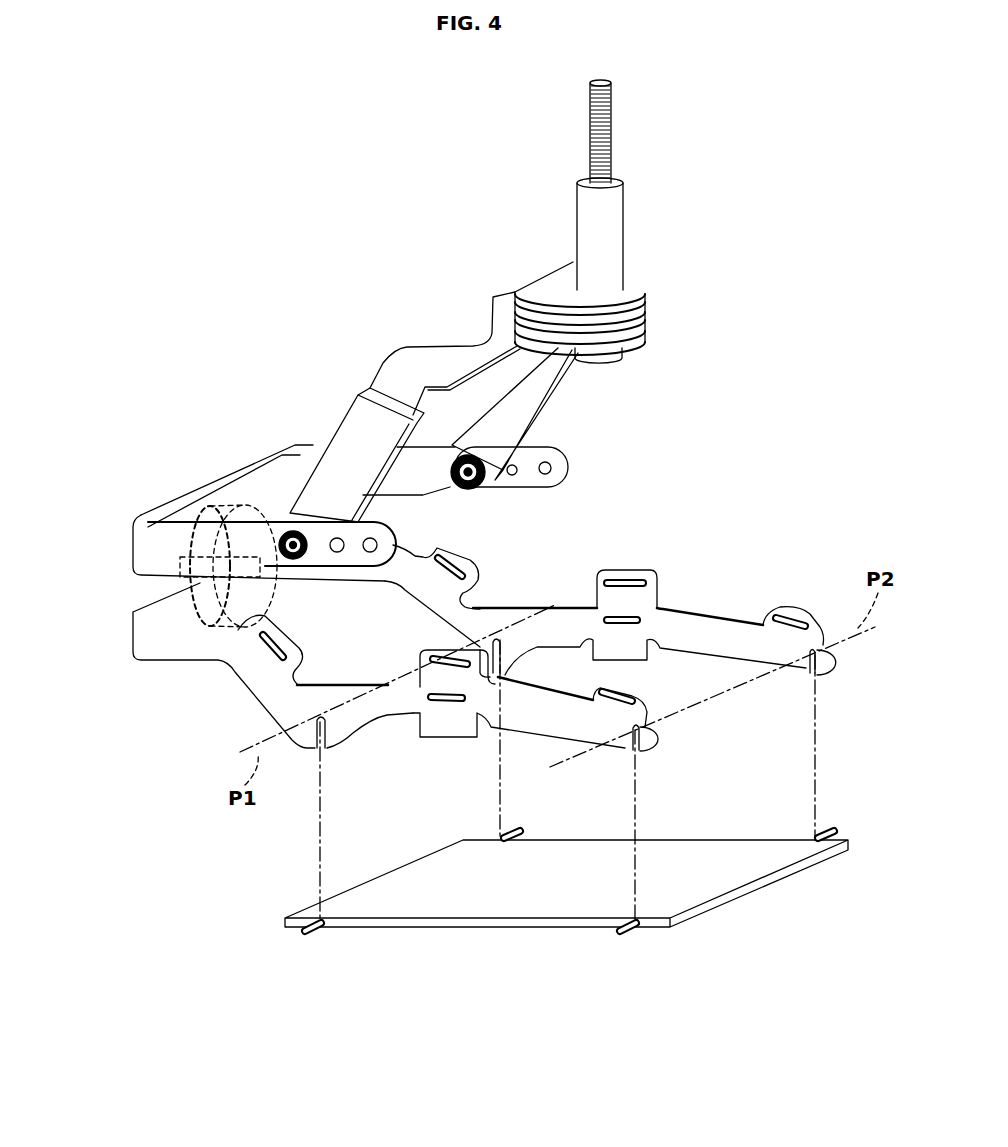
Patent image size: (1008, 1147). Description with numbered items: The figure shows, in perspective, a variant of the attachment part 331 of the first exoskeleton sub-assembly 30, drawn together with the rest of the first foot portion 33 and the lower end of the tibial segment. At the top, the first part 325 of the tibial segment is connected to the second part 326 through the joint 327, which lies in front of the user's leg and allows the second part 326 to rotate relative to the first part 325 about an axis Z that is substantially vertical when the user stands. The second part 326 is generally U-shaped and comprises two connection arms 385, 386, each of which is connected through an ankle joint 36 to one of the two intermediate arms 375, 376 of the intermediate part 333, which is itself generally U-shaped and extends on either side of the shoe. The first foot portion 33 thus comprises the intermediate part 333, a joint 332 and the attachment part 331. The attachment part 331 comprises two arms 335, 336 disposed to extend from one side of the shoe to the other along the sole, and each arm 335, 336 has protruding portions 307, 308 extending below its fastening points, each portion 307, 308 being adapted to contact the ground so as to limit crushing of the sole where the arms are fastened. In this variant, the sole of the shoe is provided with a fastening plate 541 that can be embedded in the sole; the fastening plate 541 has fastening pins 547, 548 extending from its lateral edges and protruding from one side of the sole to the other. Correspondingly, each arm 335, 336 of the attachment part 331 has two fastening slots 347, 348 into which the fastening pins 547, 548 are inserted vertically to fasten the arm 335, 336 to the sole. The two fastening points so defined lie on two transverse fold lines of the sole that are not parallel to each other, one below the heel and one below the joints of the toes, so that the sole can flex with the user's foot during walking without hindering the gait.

The first exoskeleton sub-assembly 30 is at (213, 322).
The first foot portion 33 is at (78, 600).
The ankle joint 36 is at (290, 560).
The protruding portion 307 is at (330, 760).
The protruding portion 308 is at (652, 752).
The first part of the tibial segment 325 is at (620, 128).
The second part of the tibial segment 326 is at (476, 332).
The joint 327 is at (632, 228).
The attachment part 331 is at (246, 690).
The joint 332 is at (172, 566).
The intermediate part 333 is at (214, 478).
The arm 335 is at (376, 716).
The arm 336 is at (702, 650).
The fastening slot 347 is at (318, 716).
The fastening slot 348 is at (632, 740).
The intermediate arm 375 is at (262, 548).
The intermediate arm 376 is at (437, 468).
The connection arm 385 is at (376, 367).
The connection arm 386 is at (558, 412).
The fastening plate 541 is at (592, 858).
The fastening pin 547 is at (512, 834).
The fastening pin 548 is at (826, 833).